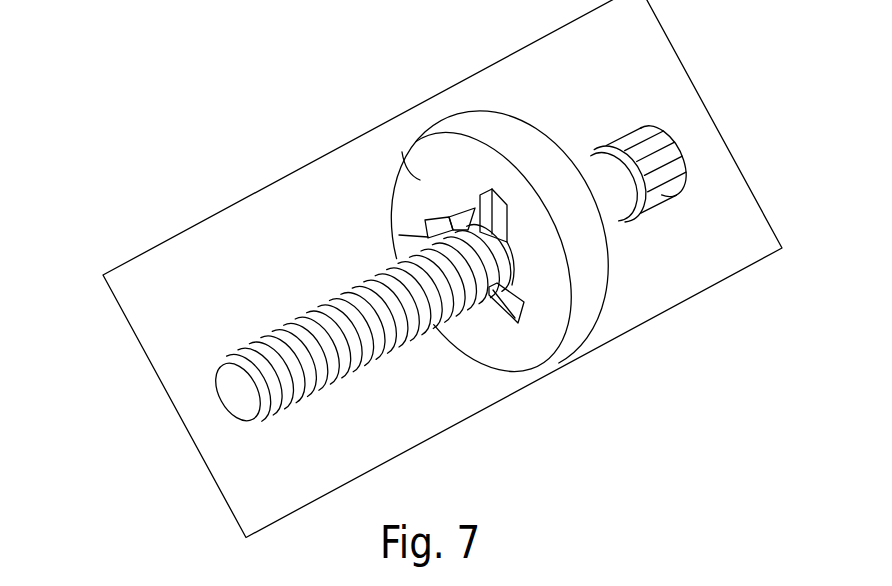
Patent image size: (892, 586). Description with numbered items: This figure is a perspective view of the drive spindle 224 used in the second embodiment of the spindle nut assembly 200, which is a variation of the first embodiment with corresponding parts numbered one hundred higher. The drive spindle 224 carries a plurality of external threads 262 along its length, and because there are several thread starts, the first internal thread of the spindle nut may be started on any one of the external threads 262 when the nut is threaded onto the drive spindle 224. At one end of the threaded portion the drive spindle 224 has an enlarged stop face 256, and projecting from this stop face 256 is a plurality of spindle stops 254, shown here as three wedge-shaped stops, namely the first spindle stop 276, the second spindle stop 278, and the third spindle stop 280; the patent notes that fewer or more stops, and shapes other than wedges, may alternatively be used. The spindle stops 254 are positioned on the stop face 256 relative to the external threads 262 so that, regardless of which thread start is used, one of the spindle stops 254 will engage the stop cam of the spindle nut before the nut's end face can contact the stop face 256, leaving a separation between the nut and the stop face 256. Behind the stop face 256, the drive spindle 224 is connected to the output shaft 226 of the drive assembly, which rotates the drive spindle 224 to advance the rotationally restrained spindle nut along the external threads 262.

The spindle nut assembly 200 is at (230, 200).
The drive spindle 224 is at (530, 114).
The output shaft 226 is at (587, 163).
The spindle stops 254 is at (546, 272).
The stop face 256 is at (402, 152).
The external threads 262 is at (334, 279).
The first spindle stop 276 is at (523, 305).
The second spindle stop 278 is at (491, 192).
The third spindle stop 280 is at (399, 235).